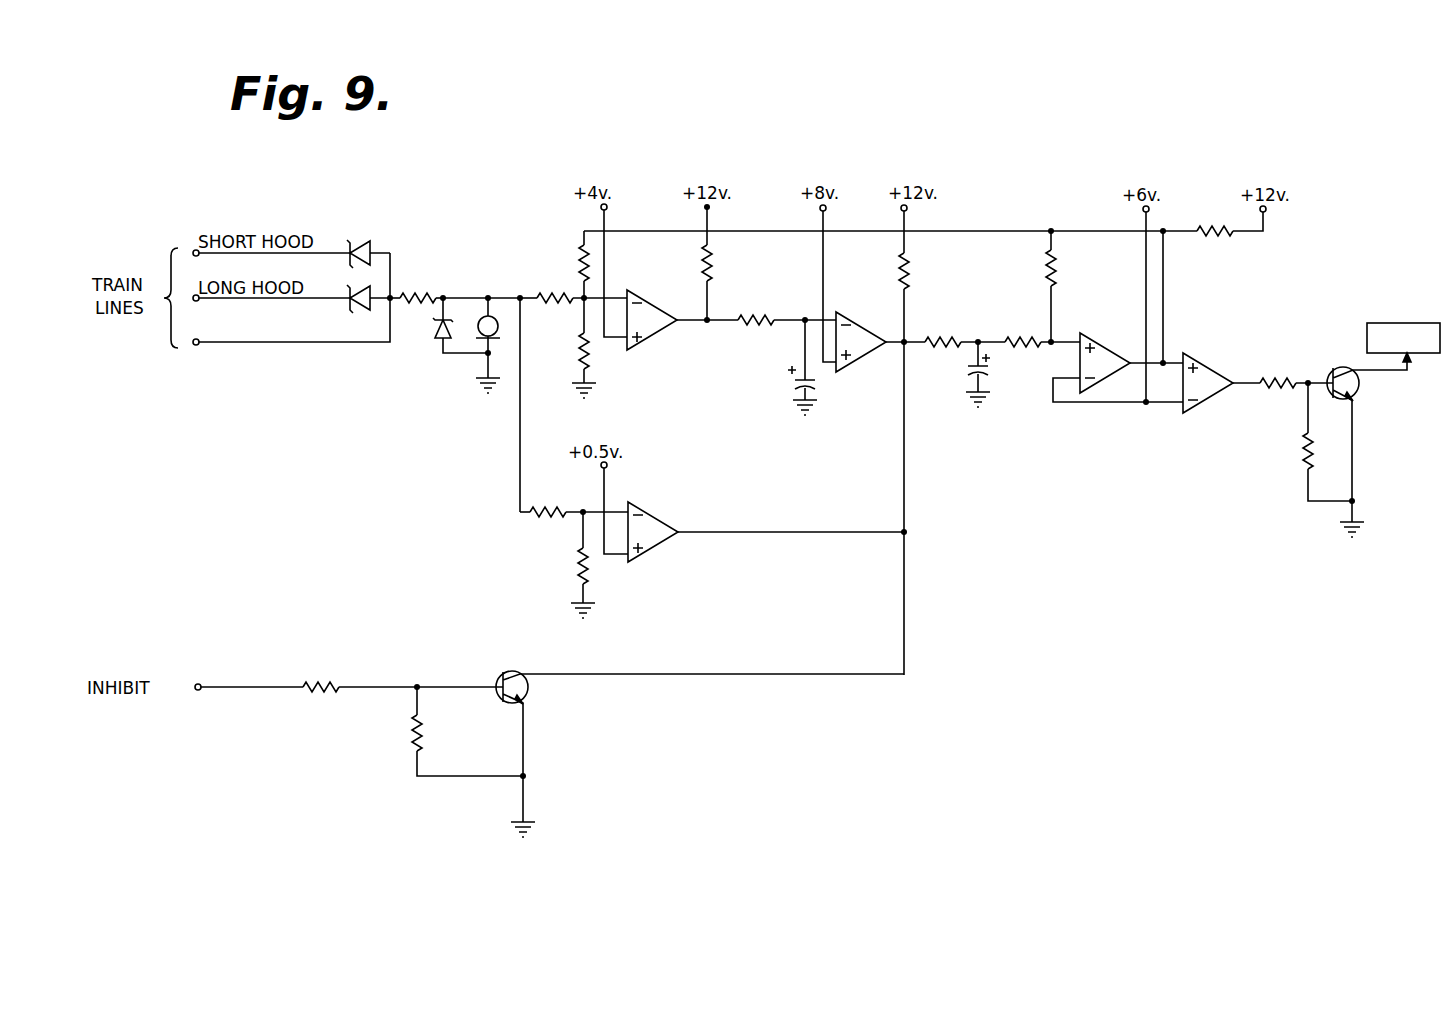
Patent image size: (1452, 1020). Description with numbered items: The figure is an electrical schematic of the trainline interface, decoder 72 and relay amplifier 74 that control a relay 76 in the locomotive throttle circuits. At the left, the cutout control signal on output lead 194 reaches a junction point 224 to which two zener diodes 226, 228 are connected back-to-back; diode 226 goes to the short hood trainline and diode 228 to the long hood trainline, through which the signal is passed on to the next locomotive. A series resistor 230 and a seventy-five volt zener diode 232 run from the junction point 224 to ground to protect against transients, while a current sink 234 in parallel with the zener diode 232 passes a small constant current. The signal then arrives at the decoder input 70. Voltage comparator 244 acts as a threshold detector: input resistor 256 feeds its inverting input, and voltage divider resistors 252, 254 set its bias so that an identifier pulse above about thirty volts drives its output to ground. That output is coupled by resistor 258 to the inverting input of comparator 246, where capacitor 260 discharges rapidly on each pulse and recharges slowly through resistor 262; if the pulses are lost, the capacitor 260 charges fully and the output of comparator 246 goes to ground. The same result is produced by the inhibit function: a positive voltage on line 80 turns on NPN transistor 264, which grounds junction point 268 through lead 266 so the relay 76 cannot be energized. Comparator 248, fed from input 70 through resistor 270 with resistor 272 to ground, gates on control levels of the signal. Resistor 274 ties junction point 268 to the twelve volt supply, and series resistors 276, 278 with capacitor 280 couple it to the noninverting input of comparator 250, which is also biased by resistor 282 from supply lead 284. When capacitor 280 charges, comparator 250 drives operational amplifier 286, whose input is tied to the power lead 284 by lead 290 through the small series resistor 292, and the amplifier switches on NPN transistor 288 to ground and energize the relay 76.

The decoder input 70 is at (519, 296).
The decoder 72 is at (997, 200).
The relay amplifier 74 is at (1216, 421).
The relay 76 is at (1399, 322).
The line 80 is at (269, 686).
The output lead 194 is at (297, 342).
The junction point 224 is at (377, 305).
The zener diode 226 is at (361, 252).
The zener diode 228 is at (388, 299).
The resistor 230 is at (443, 298).
The zener diode 232 is at (440, 342).
The current sink 234 is at (480, 349).
The voltage comparator 244 is at (656, 334).
The voltage comparator 246 is at (874, 356).
The voltage comparator 248 is at (653, 522).
The voltage comparator 250 is at (1118, 325).
The voltage divider resistor 252 is at (581, 263).
The voltage divider resistor 254 is at (589, 358).
The input resistor 256 is at (569, 306).
The resistor 258 is at (772, 320).
The capacitor 260 is at (802, 385).
The resistor 262 is at (713, 268).
The NPN transistor 264 is at (513, 672).
The lead 266 is at (904, 615).
The junction point 268 is at (903, 340).
The resistor 270 is at (542, 515).
The resistor 272 is at (576, 569).
The resistor 274 is at (912, 272).
The series resistor 276 is at (975, 342).
The series resistor 278 is at (1016, 348).
The capacitor 280 is at (975, 376).
The resistor 282 is at (1062, 270).
The supply lead 284 is at (1078, 230).
The operational amplifier 286 is at (1200, 364).
The NPN transistor switch 288 is at (1360, 387).
The lead 290 is at (1163, 312).
The series resistor 292 is at (1219, 240).